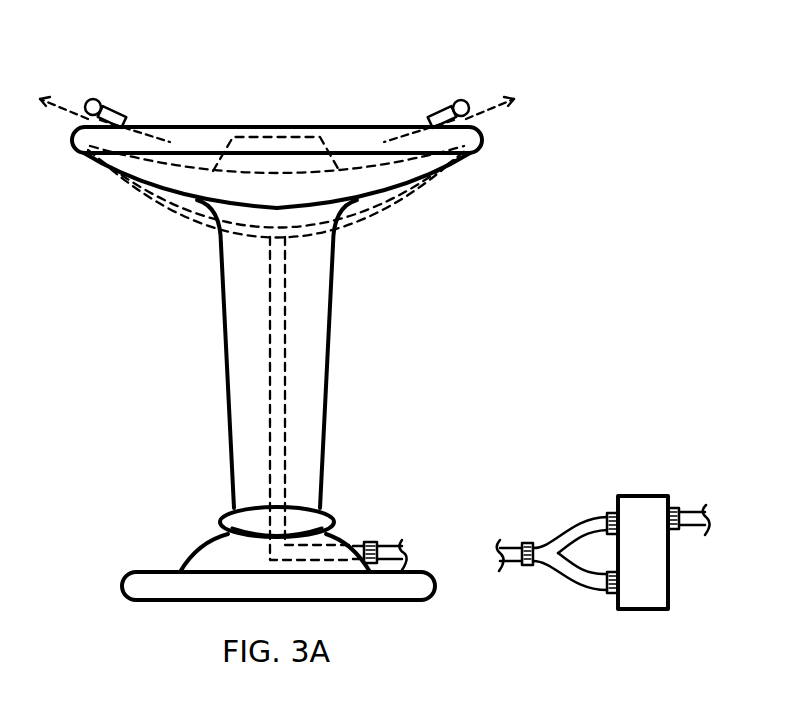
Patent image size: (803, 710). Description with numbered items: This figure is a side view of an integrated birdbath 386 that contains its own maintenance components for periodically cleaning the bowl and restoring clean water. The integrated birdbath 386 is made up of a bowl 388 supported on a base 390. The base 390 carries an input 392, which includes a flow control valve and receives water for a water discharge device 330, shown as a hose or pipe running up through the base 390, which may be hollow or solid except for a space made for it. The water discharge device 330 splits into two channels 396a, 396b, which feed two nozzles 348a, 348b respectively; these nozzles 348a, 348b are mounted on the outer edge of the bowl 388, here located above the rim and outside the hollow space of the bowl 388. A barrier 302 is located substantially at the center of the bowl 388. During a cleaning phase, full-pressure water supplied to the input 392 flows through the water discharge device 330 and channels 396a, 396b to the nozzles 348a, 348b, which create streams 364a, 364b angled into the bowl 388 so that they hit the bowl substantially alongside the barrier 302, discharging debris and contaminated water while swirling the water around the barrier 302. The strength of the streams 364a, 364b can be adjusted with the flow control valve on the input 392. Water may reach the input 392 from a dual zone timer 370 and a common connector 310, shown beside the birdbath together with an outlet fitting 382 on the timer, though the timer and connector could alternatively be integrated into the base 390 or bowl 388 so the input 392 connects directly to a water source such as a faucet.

The barrier 302 is at (277, 143).
The common connector 310 is at (546, 520).
The water discharge device 330 is at (283, 372).
The nozzle 348a is at (440, 113).
The nozzle 348b is at (115, 113).
The stream 364a is at (174, 140).
The stream 364b is at (376, 140).
The dual zone timer 370 is at (642, 480).
The outlet connector 382 is at (690, 510).
The integrated birdbath 386 is at (150, 397).
The bowl 388 is at (150, 238).
The base 390 is at (349, 522).
The input 392 is at (373, 542).
The channel 396a is at (380, 184).
The channel 396b is at (160, 176).